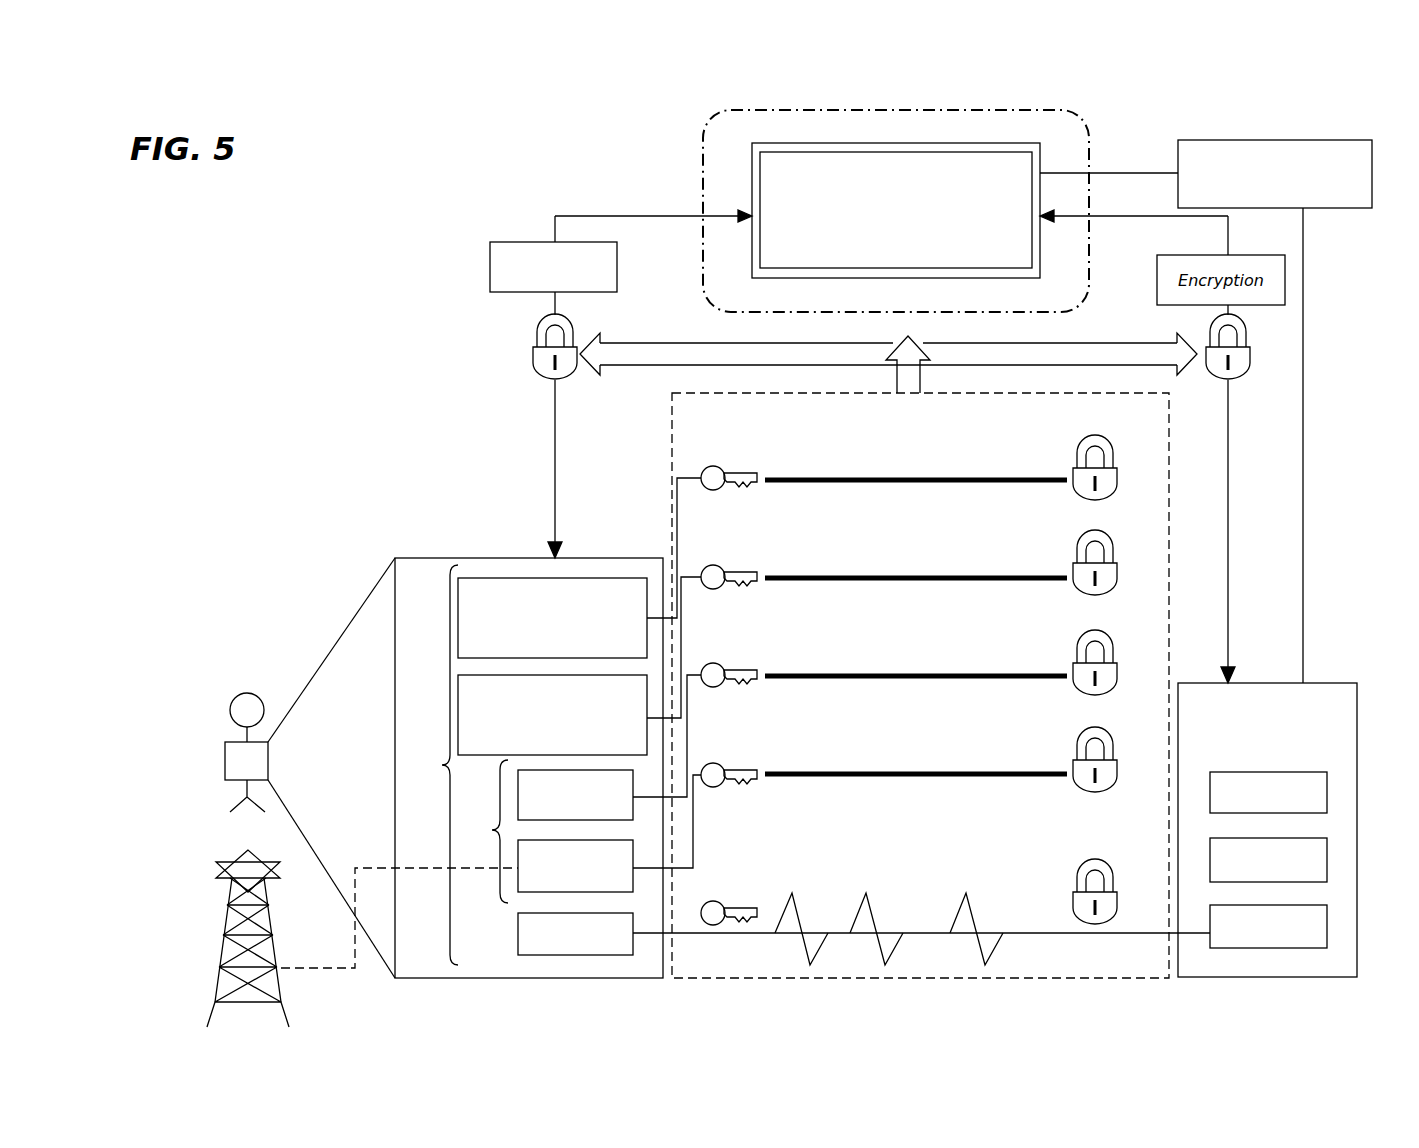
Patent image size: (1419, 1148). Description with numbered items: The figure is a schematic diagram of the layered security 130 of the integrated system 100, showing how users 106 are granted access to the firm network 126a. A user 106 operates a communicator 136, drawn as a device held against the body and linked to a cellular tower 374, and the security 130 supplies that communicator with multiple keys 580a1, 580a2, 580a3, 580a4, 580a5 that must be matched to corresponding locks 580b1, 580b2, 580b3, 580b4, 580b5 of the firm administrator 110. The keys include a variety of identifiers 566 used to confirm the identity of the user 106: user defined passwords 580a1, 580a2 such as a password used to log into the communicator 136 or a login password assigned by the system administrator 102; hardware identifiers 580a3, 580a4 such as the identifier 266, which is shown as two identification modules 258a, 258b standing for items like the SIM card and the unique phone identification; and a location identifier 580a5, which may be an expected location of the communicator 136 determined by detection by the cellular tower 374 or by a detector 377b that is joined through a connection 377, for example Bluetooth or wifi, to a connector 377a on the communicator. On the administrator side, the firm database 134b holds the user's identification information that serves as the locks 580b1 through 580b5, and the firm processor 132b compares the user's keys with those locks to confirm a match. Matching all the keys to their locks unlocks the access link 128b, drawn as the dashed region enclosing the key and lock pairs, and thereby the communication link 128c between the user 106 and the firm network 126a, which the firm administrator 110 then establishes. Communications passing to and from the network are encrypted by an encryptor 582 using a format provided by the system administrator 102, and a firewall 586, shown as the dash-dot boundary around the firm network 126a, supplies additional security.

The integrated system 100 is at (292, 232).
The layered security 130 is at (352, 330).
The encryptor 582 is at (494, 242).
The firewall 586 is at (703, 188).
The firm network 126a is at (896, 210).
The system administrator 102 is at (1275, 174).
The communication link 128c is at (535, 350).
The access link 128b is at (1040, 978).
The identifiers 566 is at (441, 766).
The identifier 266 is at (492, 830).
The first identifier 258a is at (575, 795).
The second identifier 258b is at (575, 866).
The connector 377a is at (575, 955).
The connection 377 is at (920, 933).
The detector 377b is at (1265, 948).
The firm administrator 110 is at (1267, 854).
The firm processor 132b is at (1268, 792).
The firm database 134b is at (1268, 860).
The user 106 is at (284, 727).
The communicator 136 is at (270, 757).
The cellular tower 374 is at (268, 928).
The user defined password 580a1 is at (745, 470).
The user defined password 580a2 is at (745, 569).
The hardware identifier 580a3 is at (745, 667).
The hardware identifier 580a4 is at (745, 767).
The location identifier 580a5 is at (745, 905).
The lock 580b1 is at (1073, 470).
The lock 580b2 is at (1073, 565).
The lock 580b3 is at (1073, 665).
The lock 580b4 is at (1073, 762).
The lock 580b5 is at (1073, 894).